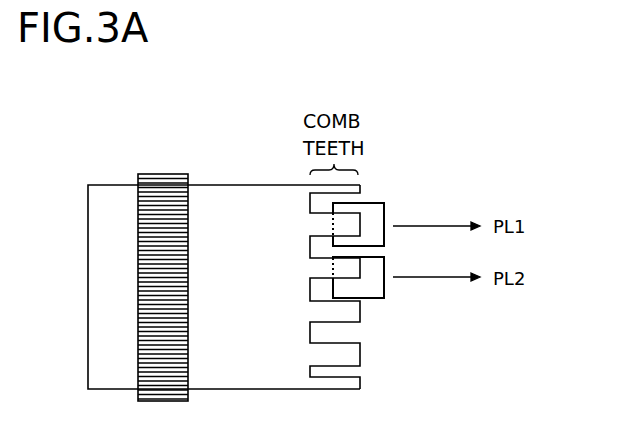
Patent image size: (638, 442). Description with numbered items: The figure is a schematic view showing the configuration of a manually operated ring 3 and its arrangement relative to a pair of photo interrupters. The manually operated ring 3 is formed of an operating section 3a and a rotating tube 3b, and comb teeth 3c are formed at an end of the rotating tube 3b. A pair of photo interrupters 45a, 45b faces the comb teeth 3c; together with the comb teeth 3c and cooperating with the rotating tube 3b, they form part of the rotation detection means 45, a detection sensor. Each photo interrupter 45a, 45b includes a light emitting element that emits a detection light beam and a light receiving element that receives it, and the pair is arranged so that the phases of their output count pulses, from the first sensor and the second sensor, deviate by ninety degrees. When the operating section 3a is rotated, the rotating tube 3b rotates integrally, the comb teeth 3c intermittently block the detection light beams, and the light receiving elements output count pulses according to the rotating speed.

The manually operated ring 3 is at (262, 107).
The operating section 3a is at (158, 184).
The rotating tube 3b is at (247, 188).
The comb teeth 3c is at (358, 189).
The rotation detection means 45 is at (571, 162).
The photo interrupter 45a is at (384, 204).
The photo interrupter 45b is at (384, 294).